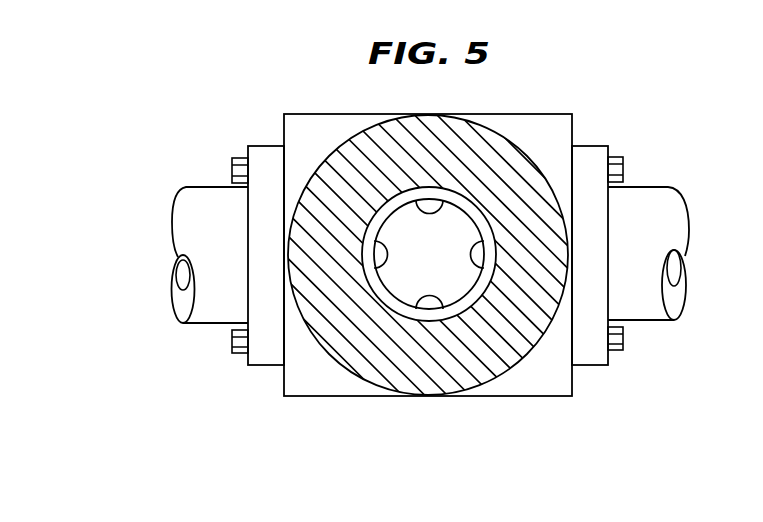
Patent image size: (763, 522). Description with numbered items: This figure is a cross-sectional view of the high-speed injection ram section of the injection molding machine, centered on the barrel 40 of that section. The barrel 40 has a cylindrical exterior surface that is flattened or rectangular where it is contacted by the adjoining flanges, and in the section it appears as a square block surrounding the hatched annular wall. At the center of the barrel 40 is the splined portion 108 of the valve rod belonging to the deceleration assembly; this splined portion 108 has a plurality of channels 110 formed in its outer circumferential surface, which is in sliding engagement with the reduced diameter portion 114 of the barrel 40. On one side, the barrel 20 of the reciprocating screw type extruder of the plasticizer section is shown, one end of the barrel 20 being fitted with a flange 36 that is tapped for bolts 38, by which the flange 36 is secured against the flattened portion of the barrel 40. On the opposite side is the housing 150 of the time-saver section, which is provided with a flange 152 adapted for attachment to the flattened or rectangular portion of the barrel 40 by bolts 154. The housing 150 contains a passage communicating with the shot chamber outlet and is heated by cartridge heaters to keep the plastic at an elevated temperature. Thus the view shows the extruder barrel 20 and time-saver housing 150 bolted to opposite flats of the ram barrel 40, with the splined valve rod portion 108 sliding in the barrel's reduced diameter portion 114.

The barrel 20 is at (670, 202).
The flange 36 is at (590, 155).
The bolts 38 is at (619, 157).
The barrel 40 is at (317, 101).
The splined portion 108 is at (446, 274).
The channels 110 is at (480, 254).
The reduced diameter portion 114 is at (382, 298).
The housing 150 is at (184, 187).
The flange 152 is at (262, 364).
The bolts 154 is at (237, 157).